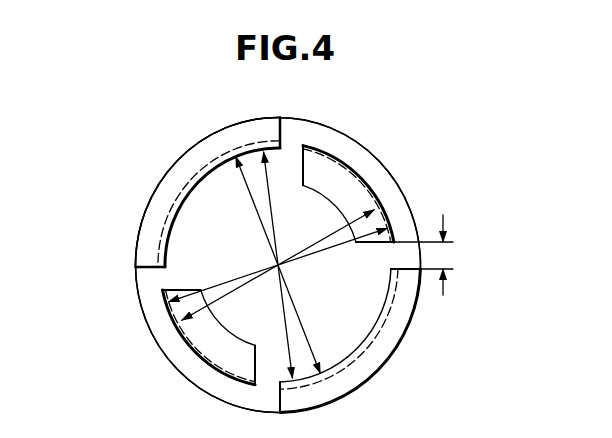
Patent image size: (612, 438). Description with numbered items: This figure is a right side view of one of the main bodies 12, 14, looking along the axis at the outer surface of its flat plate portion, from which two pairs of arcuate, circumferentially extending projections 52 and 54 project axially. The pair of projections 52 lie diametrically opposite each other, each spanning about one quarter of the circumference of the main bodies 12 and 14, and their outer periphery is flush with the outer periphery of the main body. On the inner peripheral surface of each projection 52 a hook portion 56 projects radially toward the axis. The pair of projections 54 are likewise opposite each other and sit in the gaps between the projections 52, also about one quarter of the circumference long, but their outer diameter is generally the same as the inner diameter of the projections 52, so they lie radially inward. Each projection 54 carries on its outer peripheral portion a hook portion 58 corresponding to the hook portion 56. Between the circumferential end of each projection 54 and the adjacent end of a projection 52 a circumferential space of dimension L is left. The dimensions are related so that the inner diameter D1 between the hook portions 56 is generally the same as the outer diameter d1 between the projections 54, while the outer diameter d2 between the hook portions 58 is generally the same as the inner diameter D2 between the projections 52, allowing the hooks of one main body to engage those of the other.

The main body 12 is at (380, 160).
The main body 14 is at (278, 265).
The projection 52 is at (198, 155).
The projection 54 is at (360, 200).
The hook portion 56 is at (197, 182).
The hook portion 58 is at (342, 160).
The inner diameter between hook portions 56 D1 is at (273, 211).
The inner diameter between projections 52 D2 is at (276, 265).
The outer diameter between projections 54 d1 is at (315, 245).
The outer diameter between hook portions 58 d2 is at (318, 251).
The circumferential space dimension L is at (446, 253).